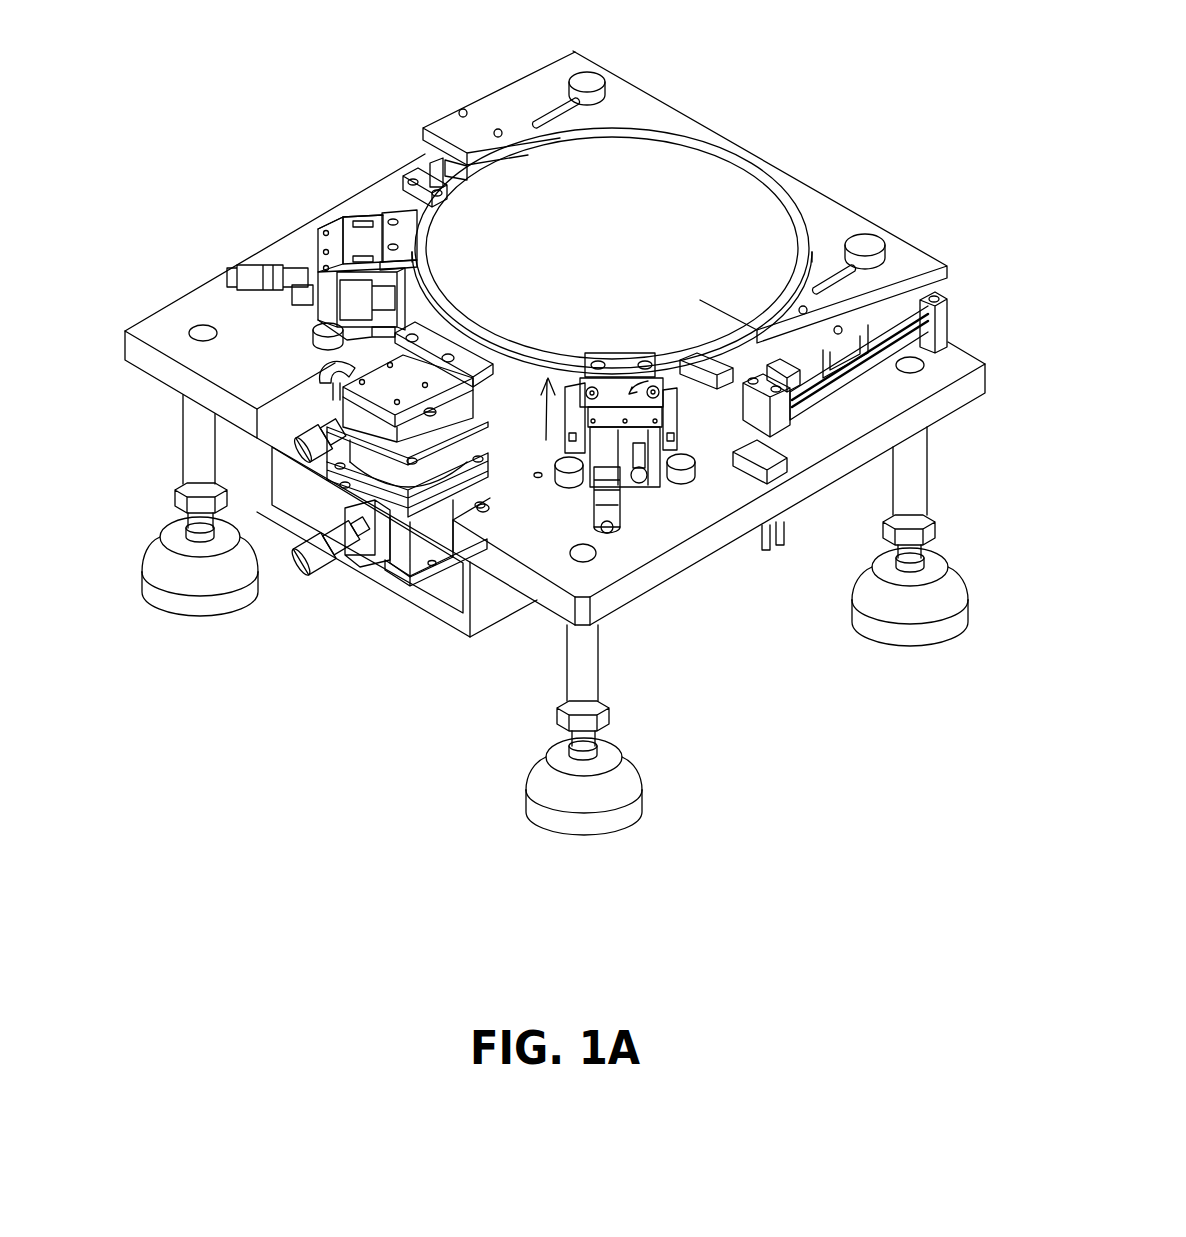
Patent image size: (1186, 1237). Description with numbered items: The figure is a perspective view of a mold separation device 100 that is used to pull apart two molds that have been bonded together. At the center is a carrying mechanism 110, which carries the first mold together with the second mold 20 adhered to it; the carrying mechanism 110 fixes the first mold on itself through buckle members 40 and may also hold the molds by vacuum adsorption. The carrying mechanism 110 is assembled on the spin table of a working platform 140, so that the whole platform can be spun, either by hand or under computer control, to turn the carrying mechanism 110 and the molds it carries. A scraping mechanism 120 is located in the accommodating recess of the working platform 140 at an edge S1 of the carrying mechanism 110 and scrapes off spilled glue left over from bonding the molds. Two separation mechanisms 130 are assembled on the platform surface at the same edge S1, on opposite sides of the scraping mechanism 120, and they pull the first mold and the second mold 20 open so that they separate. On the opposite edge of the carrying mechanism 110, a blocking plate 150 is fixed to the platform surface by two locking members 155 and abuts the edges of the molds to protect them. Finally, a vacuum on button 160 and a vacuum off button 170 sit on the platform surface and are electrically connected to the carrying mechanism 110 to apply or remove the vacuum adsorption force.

The mold separation device 100 is at (839, 756).
The carrying mechanism 110 is at (750, 365).
The scraping mechanism 120 is at (318, 322).
The separation mechanism 130 is at (352, 236).
The working platform 140 is at (957, 357).
The blocking plate 150 is at (900, 268).
The locking member 155 is at (588, 80).
The vacuum on button 160 is at (783, 443).
The vacuum off button 170 is at (347, 213).
The second mold 20 is at (712, 228).
The buckle member 40 is at (407, 217).
The edge of the carrying mechanism S1 is at (545, 440).